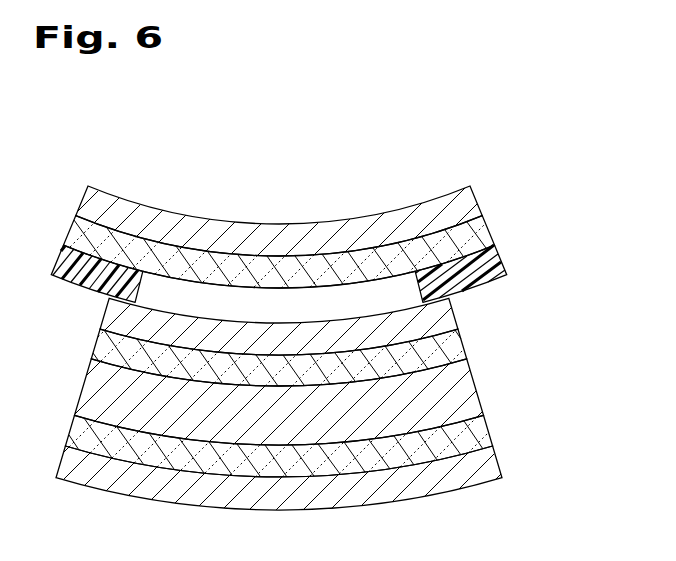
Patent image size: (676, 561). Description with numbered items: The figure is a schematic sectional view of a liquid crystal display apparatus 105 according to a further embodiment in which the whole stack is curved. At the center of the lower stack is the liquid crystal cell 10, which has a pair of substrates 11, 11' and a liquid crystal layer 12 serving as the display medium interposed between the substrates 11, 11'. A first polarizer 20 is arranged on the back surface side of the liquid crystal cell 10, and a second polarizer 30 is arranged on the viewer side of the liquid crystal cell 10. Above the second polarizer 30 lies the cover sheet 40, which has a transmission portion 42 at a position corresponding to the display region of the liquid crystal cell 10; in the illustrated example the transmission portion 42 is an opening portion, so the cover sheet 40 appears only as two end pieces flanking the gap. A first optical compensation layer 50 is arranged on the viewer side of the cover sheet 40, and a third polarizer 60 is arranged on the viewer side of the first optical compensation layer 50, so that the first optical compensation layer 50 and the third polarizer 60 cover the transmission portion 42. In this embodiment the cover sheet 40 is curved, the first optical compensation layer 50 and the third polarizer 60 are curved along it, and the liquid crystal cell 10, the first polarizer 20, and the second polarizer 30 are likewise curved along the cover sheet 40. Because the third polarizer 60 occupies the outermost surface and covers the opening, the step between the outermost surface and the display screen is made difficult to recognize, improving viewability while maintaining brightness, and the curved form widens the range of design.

The liquid crystal display apparatus 105 is at (432, 124).
The third polarizer 60 is at (480, 200).
The first optical compensation layer 50 is at (490, 231).
The cover sheet 40 is at (503, 262).
The transmission portion 42 is at (314, 300).
The second polarizer 30 is at (453, 313).
The substrate 11 is at (322, 357).
The liquid crystal layer 12 is at (472, 396).
The substrate 11' is at (311, 446).
The liquid crystal cell 10 is at (558, 327).
The first polarizer 20 is at (490, 470).